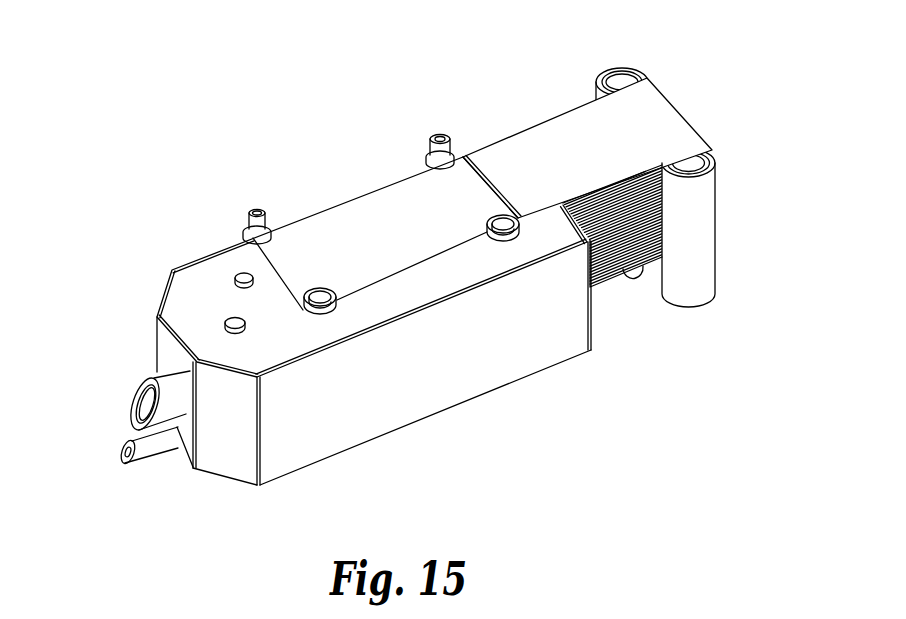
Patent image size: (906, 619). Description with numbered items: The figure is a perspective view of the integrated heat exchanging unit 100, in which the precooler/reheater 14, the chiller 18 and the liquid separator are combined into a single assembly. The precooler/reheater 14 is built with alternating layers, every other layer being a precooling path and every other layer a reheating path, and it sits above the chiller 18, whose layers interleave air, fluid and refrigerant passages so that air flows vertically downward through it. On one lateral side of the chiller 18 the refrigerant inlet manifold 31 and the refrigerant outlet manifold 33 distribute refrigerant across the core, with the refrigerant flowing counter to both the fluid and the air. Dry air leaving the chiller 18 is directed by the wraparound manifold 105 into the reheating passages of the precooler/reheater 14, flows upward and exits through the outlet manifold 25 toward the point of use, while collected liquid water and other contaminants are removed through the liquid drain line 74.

The integrated heat exchanging unit 100 is at (690, 63).
The wraparound manifold 105 is at (443, 363).
The precooler/reheater 14 is at (533, 140).
The chiller 18 is at (347, 243).
The outlet manifold 25 is at (700, 235).
The refrigerant inlet manifold 31 is at (257, 209).
The refrigerant outlet manifold 33 is at (428, 153).
The liquid drain line 74 is at (142, 406).